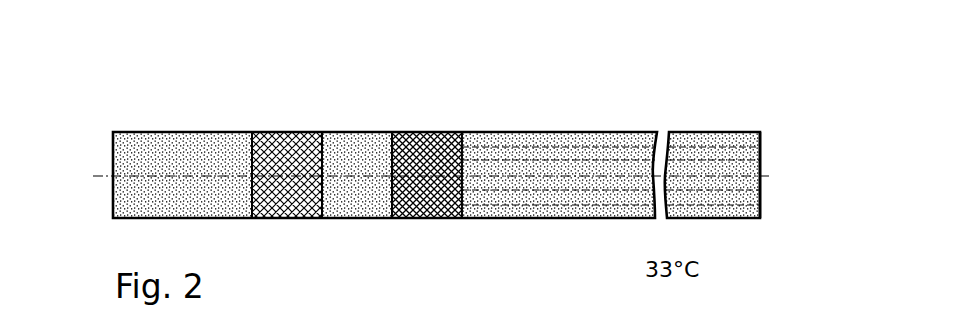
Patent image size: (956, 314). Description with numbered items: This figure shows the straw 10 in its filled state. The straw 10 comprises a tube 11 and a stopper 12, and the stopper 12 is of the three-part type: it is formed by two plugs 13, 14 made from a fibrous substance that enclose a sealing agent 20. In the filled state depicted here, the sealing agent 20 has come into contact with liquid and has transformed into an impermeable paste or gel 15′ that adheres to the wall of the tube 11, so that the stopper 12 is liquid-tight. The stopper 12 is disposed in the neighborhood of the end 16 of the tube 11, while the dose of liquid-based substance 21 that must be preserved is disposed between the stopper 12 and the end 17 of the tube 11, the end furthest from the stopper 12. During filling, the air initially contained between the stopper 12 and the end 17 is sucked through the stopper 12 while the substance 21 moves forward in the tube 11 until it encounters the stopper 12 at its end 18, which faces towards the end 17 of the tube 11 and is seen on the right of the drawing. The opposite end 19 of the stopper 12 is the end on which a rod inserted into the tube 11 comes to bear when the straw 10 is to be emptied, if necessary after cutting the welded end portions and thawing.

The straw 10 is at (161, 89).
The tube 11 is at (566, 131).
The stopper 12 is at (292, 140).
The plug 13 is at (283, 207).
The plug 14 is at (422, 208).
The impermeable paste or gel 15′ is at (348, 203).
The end of the tube 16 is at (113, 153).
The end of the tube 17 is at (762, 148).
The end of the stopper 18 is at (466, 155).
The end of the stopper 19 is at (248, 154).
The sealing agent 20 is at (362, 147).
The substance 21 is at (633, 158).